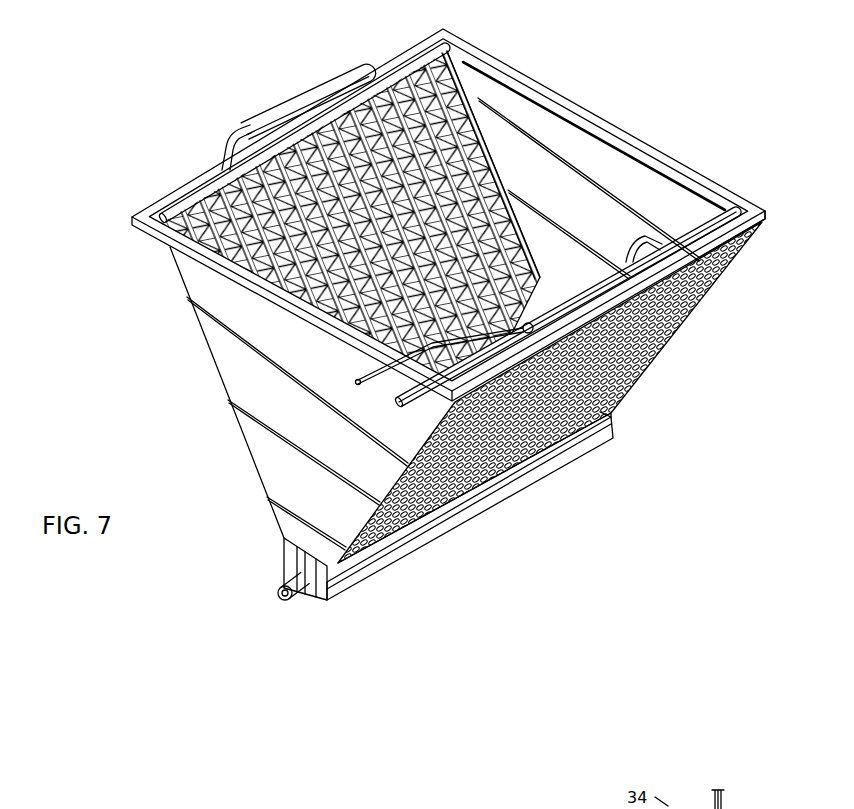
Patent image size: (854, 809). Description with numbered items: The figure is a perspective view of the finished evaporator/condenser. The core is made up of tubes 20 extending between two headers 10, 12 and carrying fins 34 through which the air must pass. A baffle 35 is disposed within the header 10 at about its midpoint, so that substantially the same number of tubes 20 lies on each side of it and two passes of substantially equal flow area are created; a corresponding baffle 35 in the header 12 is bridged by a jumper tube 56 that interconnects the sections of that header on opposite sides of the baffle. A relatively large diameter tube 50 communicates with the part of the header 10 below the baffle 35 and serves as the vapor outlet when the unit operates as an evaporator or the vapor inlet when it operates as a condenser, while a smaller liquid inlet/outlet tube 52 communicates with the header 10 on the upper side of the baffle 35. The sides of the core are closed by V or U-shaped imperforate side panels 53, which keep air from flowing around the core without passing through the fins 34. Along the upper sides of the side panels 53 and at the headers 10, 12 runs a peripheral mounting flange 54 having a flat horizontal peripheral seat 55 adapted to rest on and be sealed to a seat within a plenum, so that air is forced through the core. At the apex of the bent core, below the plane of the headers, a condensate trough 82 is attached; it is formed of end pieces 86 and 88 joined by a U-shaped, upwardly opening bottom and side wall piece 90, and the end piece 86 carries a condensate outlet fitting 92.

The header 10 is at (700, 234).
The header 12 is at (388, 60).
The tubes 20 is at (440, 52).
The fins 34 is at (227, 188).
The baffle 35 is at (262, 135).
The large diameter tube 50 is at (398, 406).
The liquid inlet/outlet tube 52 is at (352, 368).
The imperforate side panels 53 is at (250, 439).
The peripheral mounting flange 54 is at (592, 104).
The peripheral seat 55 is at (212, 262).
The jumper tube 56 is at (302, 105).
The condensate trough 82 is at (444, 547).
The end piece 86 is at (292, 563).
The end piece 88 is at (615, 416).
The bottom and side wall piece 90 is at (537, 481).
The condensate outlet fitting 92 is at (277, 598).